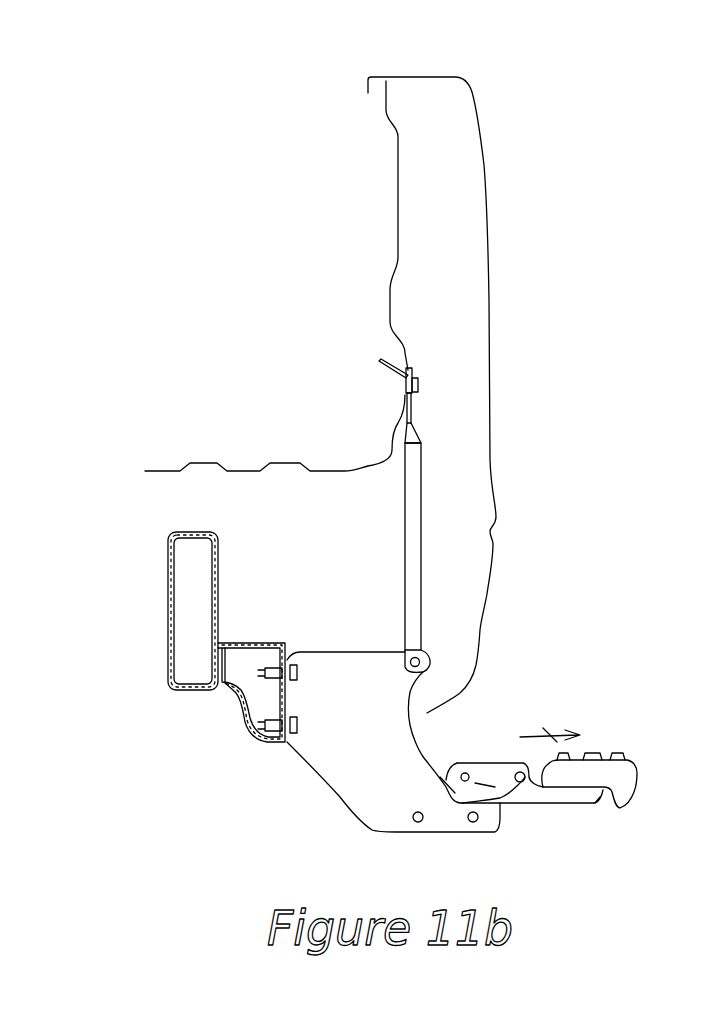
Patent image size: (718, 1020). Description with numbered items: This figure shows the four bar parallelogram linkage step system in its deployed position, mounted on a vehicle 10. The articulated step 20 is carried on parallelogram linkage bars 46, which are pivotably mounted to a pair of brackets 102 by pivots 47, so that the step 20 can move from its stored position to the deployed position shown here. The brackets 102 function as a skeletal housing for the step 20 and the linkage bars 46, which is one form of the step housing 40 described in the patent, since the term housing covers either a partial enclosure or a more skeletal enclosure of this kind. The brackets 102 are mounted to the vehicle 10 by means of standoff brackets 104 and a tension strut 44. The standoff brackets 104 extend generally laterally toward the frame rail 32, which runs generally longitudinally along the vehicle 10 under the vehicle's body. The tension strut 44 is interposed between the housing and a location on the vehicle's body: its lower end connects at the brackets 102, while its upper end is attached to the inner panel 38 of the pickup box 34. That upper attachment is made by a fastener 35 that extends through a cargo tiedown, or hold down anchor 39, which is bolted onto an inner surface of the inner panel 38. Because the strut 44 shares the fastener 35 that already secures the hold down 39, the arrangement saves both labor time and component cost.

The vehicle 10 is at (212, 286).
The step 20 is at (628, 773).
The frame rail 32 is at (172, 617).
The pickup box 34 is at (497, 166).
The fastener 35 is at (418, 386).
The inner panel 38 is at (398, 211).
The cargo tiedown 39 is at (398, 373).
The step housing 40 is at (598, 803).
The tension strut 44 is at (405, 553).
The linkage bars 46 is at (448, 777).
The pivots 47 is at (477, 823).
The brackets 102 is at (333, 772).
The standoff brackets 104 is at (242, 642).